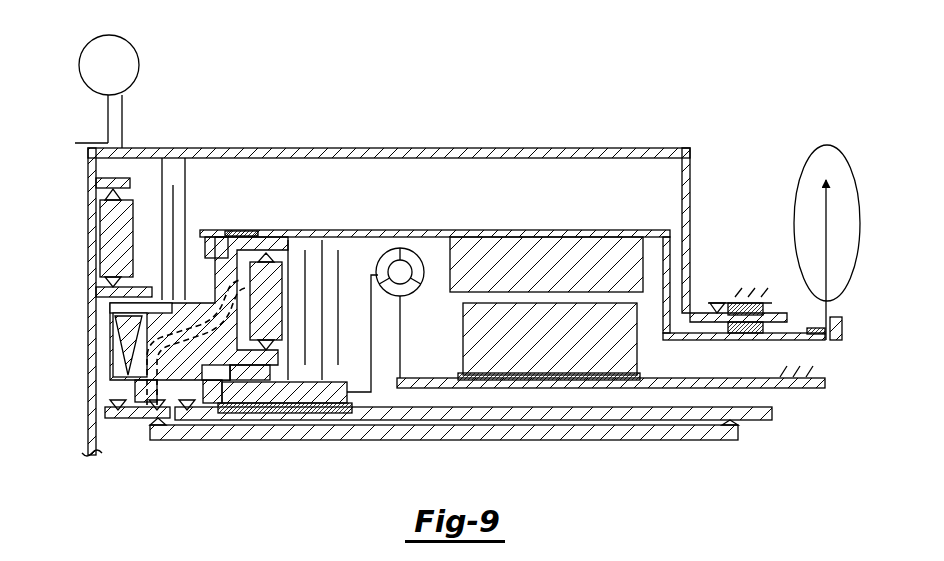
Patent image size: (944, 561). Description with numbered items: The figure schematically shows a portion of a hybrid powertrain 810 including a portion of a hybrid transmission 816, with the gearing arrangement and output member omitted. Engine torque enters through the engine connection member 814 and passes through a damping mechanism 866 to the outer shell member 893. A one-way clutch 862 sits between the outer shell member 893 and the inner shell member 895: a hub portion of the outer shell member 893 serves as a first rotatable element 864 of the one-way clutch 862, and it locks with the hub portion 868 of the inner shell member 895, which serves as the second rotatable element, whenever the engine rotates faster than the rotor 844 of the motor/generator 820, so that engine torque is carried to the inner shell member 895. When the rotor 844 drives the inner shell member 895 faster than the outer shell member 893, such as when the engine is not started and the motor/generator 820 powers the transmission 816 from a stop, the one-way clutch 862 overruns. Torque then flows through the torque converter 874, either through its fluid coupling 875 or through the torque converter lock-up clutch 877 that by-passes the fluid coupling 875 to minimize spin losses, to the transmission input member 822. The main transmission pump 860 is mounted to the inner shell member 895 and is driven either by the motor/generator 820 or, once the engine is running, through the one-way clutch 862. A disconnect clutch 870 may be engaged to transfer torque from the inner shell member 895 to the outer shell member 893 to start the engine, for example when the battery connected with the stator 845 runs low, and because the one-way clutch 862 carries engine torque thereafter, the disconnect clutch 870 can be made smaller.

The hybrid powertrain 810 is at (622, 70).
The engine connection member 814 is at (82, 143).
The hybrid transmission 816 is at (474, 124).
The motor/generator 820 is at (613, 220).
The transmission input member 822 is at (765, 420).
The rotor 844 is at (512, 250).
The stator 845 is at (497, 330).
The main transmission pump 860 is at (842, 150).
The one-way clutch 862 is at (130, 343).
The first rotatable element 864 is at (116, 380).
The damping mechanism 866 is at (130, 44).
The hub portion 868 is at (110, 305).
The disconnect clutch 870 is at (202, 188).
The torque converter 874 is at (352, 275).
The fluid coupling 875 is at (431, 249).
The torque converter lock-up clutch 877 is at (302, 243).
The outer shell member 893 is at (252, 148).
The inner shell member 895 is at (472, 233).